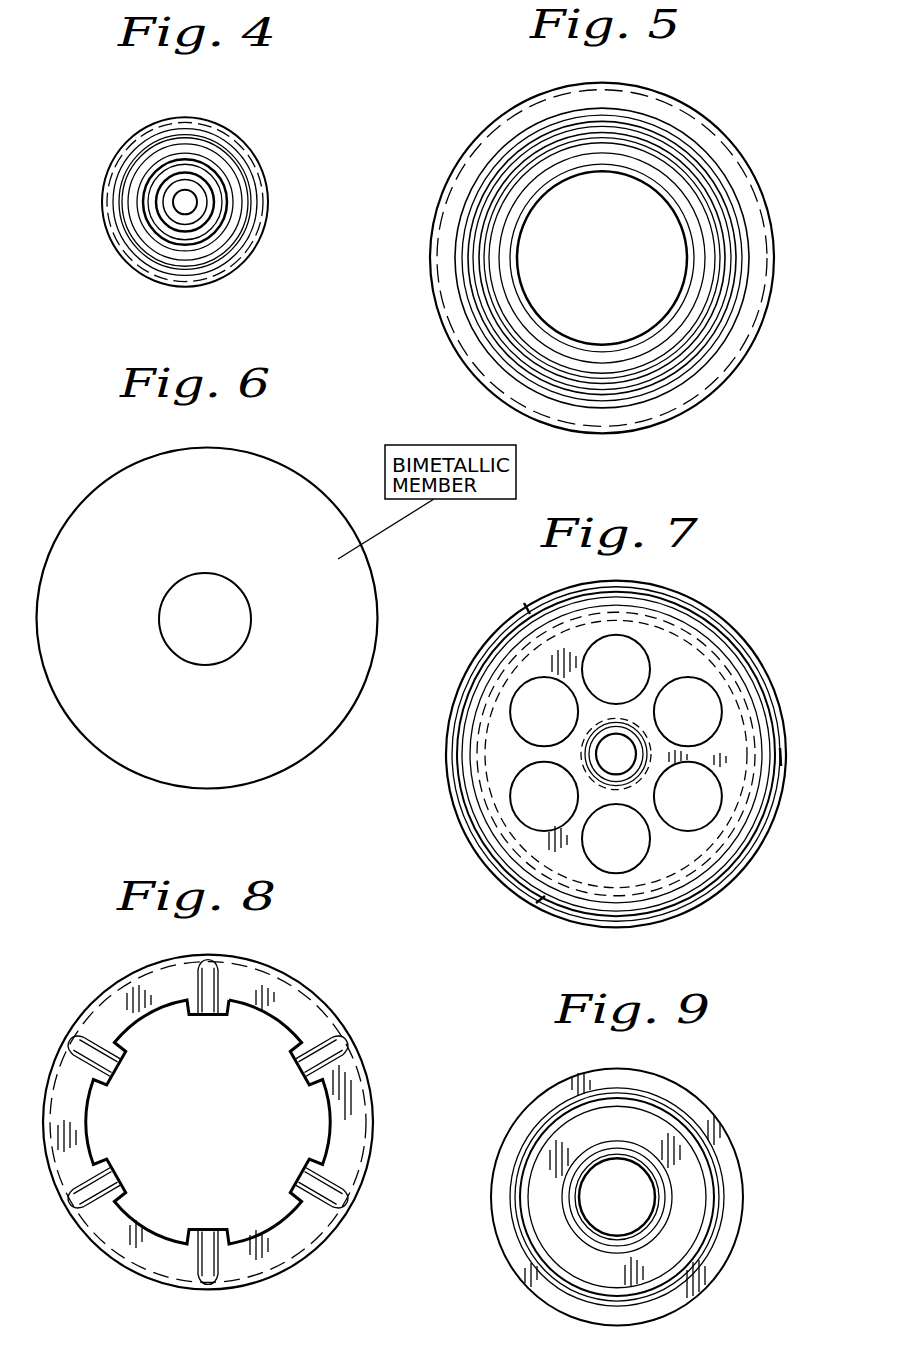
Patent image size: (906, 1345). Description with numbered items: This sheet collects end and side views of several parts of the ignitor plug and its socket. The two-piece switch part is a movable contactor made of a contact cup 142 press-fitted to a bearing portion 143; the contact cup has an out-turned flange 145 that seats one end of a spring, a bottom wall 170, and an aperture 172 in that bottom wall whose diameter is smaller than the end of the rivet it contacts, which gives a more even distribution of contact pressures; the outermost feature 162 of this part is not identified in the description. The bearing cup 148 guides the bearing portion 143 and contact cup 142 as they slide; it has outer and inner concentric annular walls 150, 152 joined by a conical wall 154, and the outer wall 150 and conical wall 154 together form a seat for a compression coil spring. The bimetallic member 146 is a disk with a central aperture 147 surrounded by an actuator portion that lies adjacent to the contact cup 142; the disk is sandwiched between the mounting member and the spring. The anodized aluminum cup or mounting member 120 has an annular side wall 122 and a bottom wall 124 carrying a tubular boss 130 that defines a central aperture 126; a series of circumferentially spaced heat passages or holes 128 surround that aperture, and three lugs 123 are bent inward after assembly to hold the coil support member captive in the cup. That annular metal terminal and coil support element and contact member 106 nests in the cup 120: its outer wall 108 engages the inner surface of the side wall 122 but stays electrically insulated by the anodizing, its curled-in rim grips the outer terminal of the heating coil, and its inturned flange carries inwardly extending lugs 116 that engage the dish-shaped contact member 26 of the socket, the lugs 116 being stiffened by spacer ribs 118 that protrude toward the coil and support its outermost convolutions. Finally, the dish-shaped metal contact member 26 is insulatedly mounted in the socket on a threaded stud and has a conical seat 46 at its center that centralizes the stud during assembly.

In FIG. 9, the dish-shaped metal contact member 26 is at (710, 1100).
In FIG. 9, the conical seat 46 is at (652, 1222).
In FIG. 8, the terminal and coil support element and contact member 106 is at (320, 993).
In FIG. 8, the outer wall 108 is at (108, 993).
In FIG. 8, the lugs 116 is at (175, 1035).
In FIG. 8, the spacer ribs 118 is at (290, 1077).
In FIG. 7, the anodized aluminum cup or mounting member 120 is at (490, 896).
In FIG. 7, the annular side wall 122 is at (690, 607).
In FIG. 7, the lugs 123 is at (528, 612).
In FIG. 7, the bottom wall 124 is at (494, 759).
In FIG. 7, the central aperture 126 is at (620, 765).
In FIG. 7, the heat-passages or holes 128 is at (708, 697).
In FIG. 7, the tubular boss 130 is at (658, 737).
In FIG. 4, the contact cup 142 is at (213, 225).
In FIG. 4, the bearing portion 143 is at (220, 138).
In FIG. 4, the out-turned flange 145 is at (212, 248).
In FIG. 6, the bimetallic member or operator 146 is at (327, 495).
In FIG. 6, the central aperture 147 is at (245, 606).
In FIG. 5, the bearing cup 148 is at (755, 164).
In FIG. 5, the outer annular wall 150 is at (525, 105).
In FIG. 5, the inner annular wall 152 is at (662, 195).
In FIG. 5, the conical wall 154 is at (492, 183).
In FIG. 4, the flange 162 is at (148, 127).
In FIG. 4, the bottom wall 170 is at (202, 208).
In FIG. 4, the aperture 172 is at (195, 200).